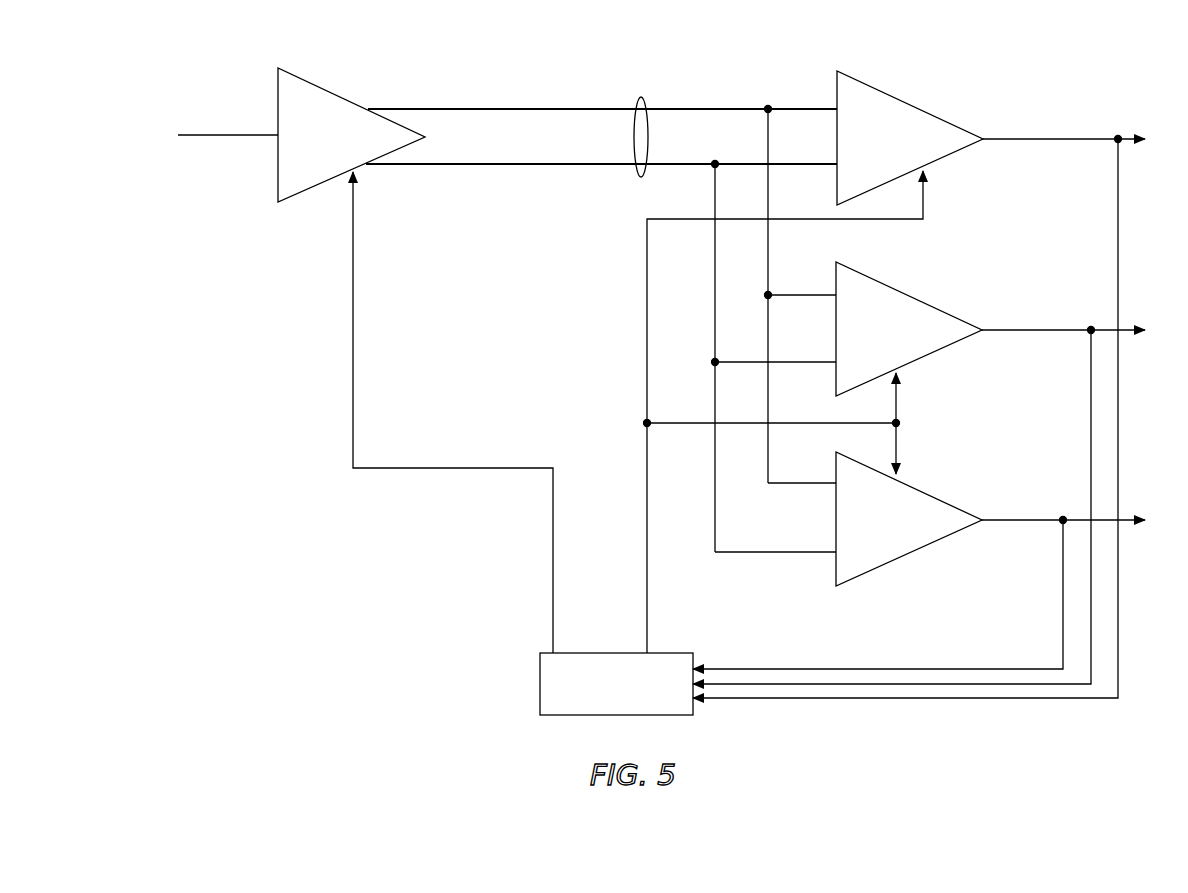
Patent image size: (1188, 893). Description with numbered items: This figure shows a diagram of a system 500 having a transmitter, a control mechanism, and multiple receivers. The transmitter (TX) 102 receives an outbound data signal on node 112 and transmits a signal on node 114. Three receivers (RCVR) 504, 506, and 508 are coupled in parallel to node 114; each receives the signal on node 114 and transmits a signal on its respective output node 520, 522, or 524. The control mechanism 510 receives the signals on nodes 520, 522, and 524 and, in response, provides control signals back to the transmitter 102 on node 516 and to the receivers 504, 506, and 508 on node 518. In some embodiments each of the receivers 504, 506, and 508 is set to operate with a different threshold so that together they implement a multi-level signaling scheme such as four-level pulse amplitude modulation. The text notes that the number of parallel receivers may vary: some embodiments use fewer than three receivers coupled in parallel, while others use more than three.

The transceiver system with multiple receivers 500 is at (1146, 720).
The transmitter 102 is at (325, 82).
The node 112 is at (249, 137).
The node 114 is at (641, 97).
The receiver 504 is at (863, 78).
The receiver 506 is at (833, 357).
The receiver 508 is at (833, 581).
The control mechanism 510 is at (538, 702).
The node 516 is at (353, 410).
The node 518 is at (647, 375).
The node 520 is at (1057, 138).
The node 522 is at (1040, 328).
The node 524 is at (1002, 518).